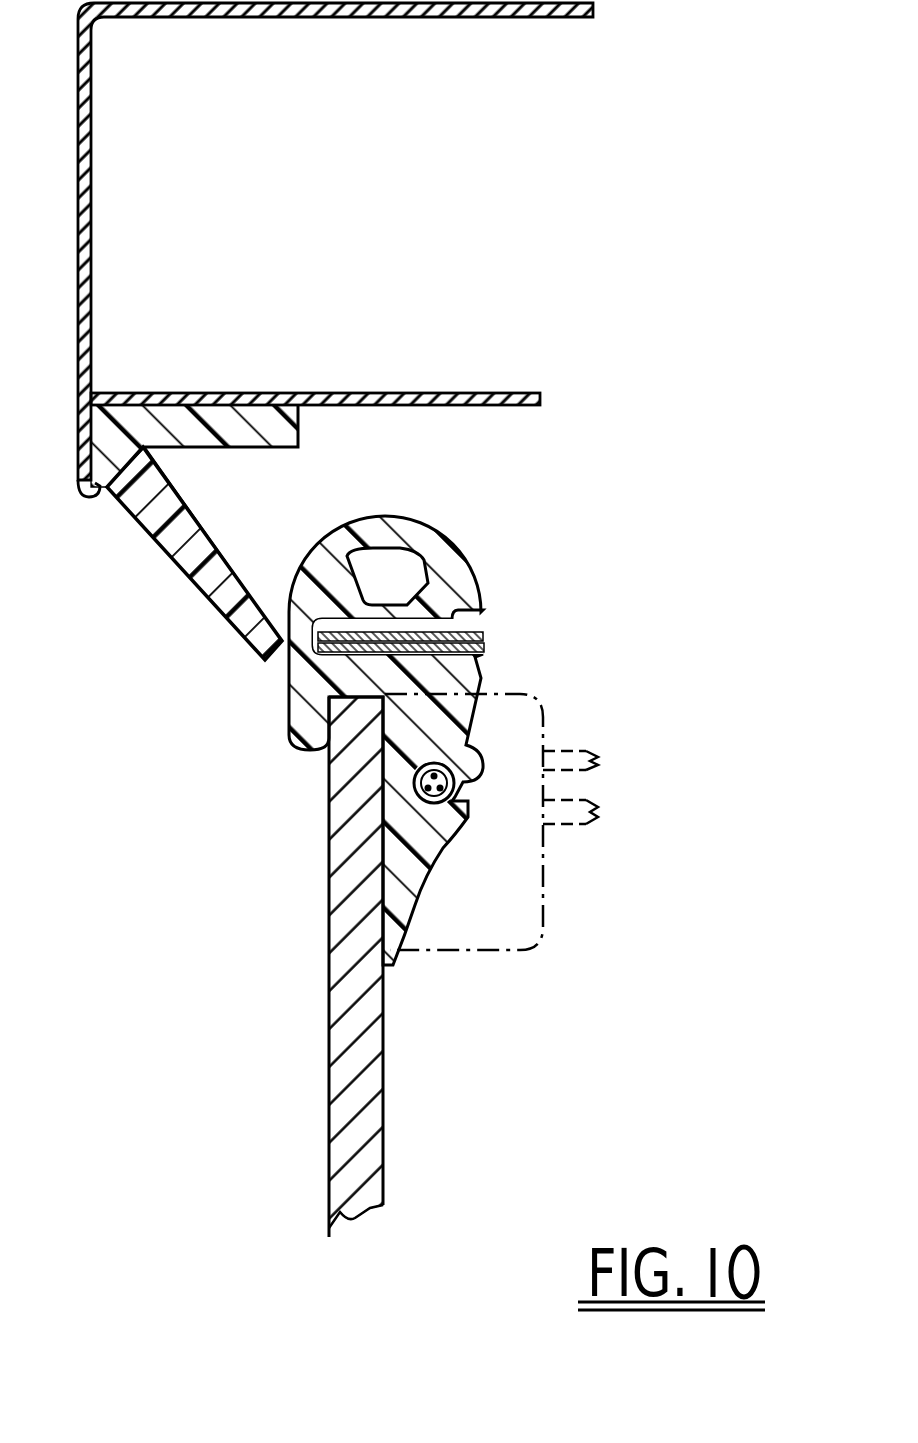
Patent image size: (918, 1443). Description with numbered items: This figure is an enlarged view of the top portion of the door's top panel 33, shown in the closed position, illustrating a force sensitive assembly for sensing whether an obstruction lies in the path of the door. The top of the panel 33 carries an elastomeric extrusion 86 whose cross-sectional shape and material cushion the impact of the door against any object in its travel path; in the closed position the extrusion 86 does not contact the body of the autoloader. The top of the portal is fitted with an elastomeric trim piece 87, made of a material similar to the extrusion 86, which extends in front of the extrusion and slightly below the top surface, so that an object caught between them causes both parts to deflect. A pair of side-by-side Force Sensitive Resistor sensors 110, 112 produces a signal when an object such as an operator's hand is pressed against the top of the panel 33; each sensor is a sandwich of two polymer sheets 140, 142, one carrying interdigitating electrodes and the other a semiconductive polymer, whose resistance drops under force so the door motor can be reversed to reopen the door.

The top panel 33 is at (330, 1036).
The elastomeric extrusion 86 is at (433, 518).
The elastomeric trim piece 87 is at (210, 600).
The Force Sensitive Resistor sensor 110 is at (498, 611).
The Force Sensitive Resistor sensor 112 is at (619, 689).
The polymer sheet 140 is at (483, 636).
The polymer sheet 142 is at (482, 648).